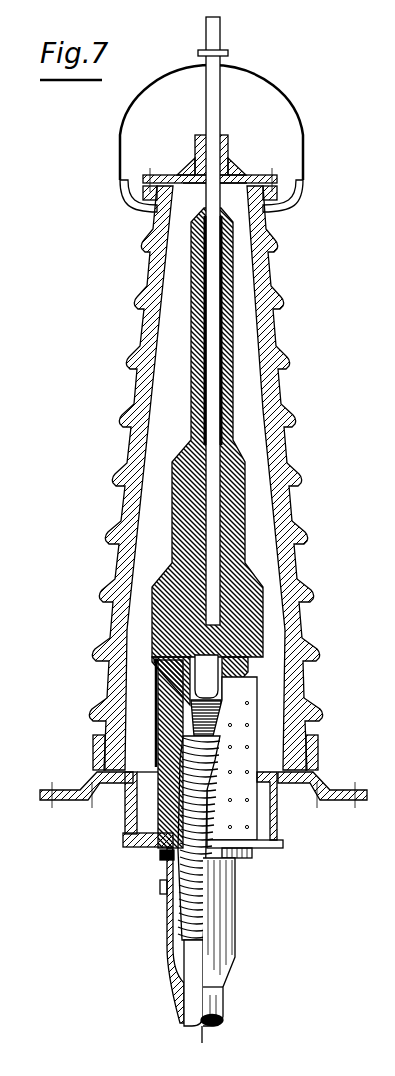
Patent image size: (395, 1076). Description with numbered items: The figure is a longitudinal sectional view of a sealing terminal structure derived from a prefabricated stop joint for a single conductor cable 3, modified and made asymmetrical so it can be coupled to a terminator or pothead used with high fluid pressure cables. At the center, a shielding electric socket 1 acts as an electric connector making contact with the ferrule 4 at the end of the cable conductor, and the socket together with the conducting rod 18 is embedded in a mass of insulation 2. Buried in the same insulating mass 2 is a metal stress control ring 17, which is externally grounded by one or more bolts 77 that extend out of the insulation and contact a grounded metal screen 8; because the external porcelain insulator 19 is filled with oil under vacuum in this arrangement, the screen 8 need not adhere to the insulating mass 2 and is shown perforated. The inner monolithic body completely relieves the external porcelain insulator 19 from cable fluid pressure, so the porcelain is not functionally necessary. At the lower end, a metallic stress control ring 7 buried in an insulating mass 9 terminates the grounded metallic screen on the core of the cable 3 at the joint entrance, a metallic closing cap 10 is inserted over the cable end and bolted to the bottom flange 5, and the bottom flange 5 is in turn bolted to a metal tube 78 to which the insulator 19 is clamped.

The shielding electric socket 1 is at (158, 705).
The insulating mass 2 is at (247, 587).
The cable 3 is at (197, 752).
The ferrule 4 is at (210, 678).
The bottom flange 5 is at (170, 845).
The metallic stress control ring 7 is at (165, 860).
The grounded metal screen 8 is at (243, 760).
The insulating mass 9 is at (163, 818).
The metallic closing cap 10 is at (167, 930).
The metal stress control ring 17 is at (258, 645).
The conducting rod 18 is at (204, 563).
The external porcelain insulator 19 is at (112, 625).
The bolts 77 is at (155, 661).
The metal tube 78 is at (277, 815).